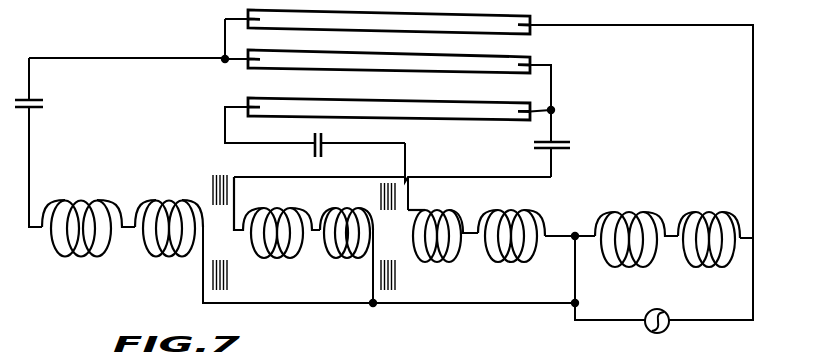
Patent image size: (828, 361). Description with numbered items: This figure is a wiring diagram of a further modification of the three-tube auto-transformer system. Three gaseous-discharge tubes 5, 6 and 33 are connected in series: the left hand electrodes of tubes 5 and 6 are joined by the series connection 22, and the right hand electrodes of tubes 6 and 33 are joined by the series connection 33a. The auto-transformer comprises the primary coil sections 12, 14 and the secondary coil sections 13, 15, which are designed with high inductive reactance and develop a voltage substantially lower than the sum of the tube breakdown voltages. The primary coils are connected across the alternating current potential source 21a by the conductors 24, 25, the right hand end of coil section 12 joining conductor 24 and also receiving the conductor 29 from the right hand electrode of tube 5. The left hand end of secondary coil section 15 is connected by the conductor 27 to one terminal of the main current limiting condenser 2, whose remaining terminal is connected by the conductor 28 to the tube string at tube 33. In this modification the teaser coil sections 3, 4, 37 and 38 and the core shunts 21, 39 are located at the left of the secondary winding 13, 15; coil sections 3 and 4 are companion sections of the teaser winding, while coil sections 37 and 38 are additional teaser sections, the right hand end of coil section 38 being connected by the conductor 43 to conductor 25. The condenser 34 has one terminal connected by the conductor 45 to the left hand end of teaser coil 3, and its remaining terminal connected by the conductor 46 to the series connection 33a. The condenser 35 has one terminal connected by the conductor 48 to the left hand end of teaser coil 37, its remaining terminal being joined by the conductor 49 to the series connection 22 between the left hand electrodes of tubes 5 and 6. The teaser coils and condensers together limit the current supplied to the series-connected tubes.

The gaseous-discharge tube 5 is at (372, 27).
The gaseous-discharge tube 6 is at (382, 70).
The third tube 33 is at (462, 124).
The main current limiting condenser 2 is at (323, 140).
The condenser 34 is at (555, 149).
The condenser 35 is at (40, 106).
The teaser winding coil section 37 is at (85, 202).
The teaser winding coil section 38 is at (166, 203).
The teaser winding coil section 3 is at (280, 209).
The teaser winding coil section 4 is at (344, 209).
The secondary coil section 15 is at (436, 211).
The secondary coil section 13 is at (511, 211).
The primary coil section 14 is at (635, 212).
The primary coil section 12 is at (704, 212).
The core shunt 39 is at (216, 177).
The core shunt 21 is at (397, 278).
The alternating current potential source 21a is at (666, 330).
The series connection 22 is at (223, 33).
The conductor 28 is at (225, 118).
The conductor 49 is at (113, 58).
The conductor 48 is at (30, 158).
The conductor 27 is at (407, 160).
The conductor 45 is at (481, 177).
The series connection 33a is at (553, 70).
The conductor 46 is at (555, 114).
The conductor 29 is at (752, 65).
The conductor 24 is at (752, 288).
The conductor 25 is at (577, 277).
The conductor 43 is at (300, 305).